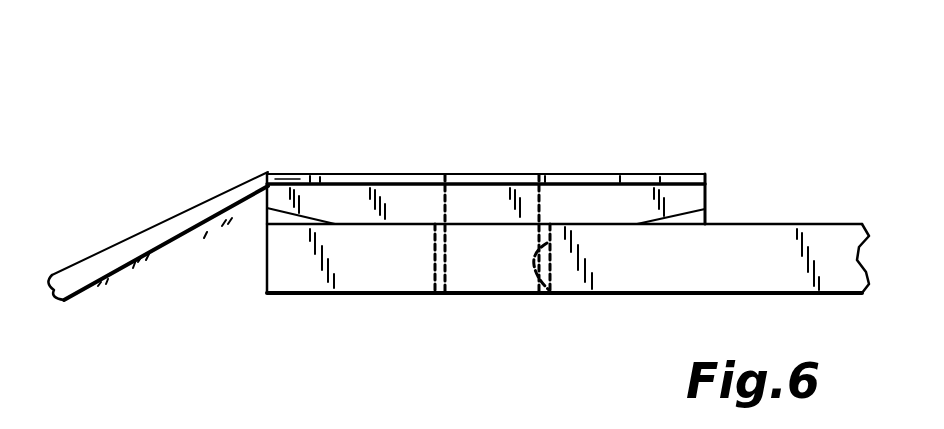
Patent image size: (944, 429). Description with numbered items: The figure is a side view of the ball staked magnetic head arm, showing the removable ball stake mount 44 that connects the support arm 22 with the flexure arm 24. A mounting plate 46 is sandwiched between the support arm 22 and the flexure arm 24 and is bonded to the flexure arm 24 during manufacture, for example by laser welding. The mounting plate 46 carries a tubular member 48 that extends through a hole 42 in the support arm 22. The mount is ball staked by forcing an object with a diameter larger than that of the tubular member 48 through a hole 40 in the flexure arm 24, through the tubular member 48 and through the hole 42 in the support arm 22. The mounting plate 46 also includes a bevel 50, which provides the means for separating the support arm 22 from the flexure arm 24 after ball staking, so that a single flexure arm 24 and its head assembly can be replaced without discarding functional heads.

The support arm 22 is at (738, 274).
The flexure arm 24 is at (170, 213).
The hole 40 is at (487, 181).
The hole 42 is at (545, 283).
The ball stake mount 44 is at (558, 163).
The mounting plate 46 is at (345, 206).
The tubular member 48 is at (476, 275).
The bevel 50 is at (264, 220).